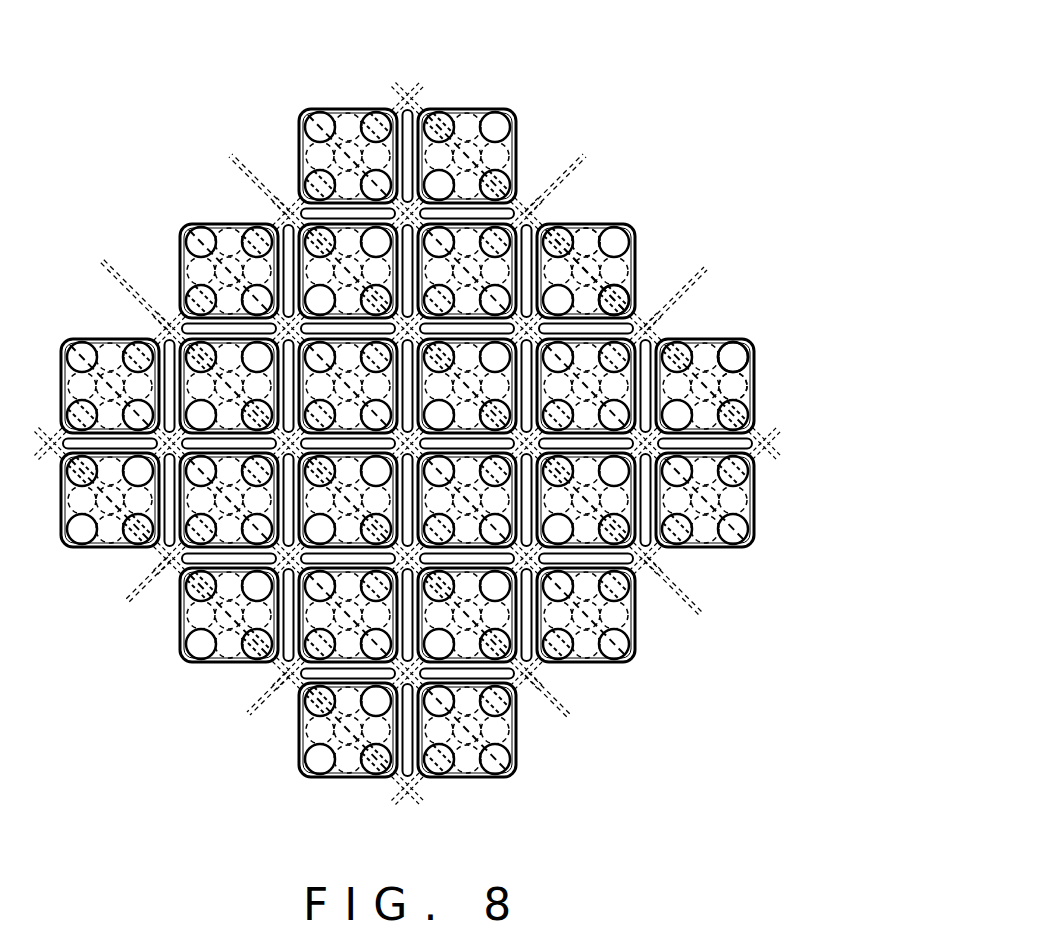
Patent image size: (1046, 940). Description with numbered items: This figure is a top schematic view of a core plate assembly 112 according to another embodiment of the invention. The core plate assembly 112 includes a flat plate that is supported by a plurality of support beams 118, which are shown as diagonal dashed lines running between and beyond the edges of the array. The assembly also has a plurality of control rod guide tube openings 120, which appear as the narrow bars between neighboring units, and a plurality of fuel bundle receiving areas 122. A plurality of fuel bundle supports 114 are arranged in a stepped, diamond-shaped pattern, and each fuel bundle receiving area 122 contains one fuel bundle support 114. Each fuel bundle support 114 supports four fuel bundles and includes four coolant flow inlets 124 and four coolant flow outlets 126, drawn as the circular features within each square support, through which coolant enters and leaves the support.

The core plate assembly 112 is at (440, 410).
The fuel bundle support 114 is at (528, 133).
The support beam 118 is at (235, 167).
The control rod guide tube opening 120 is at (411, 100).
The fuel bundle receiving area 122 is at (598, 262).
The coolant flow inlet 124 is at (590, 238).
The coolant flow outlet 126 is at (620, 293).